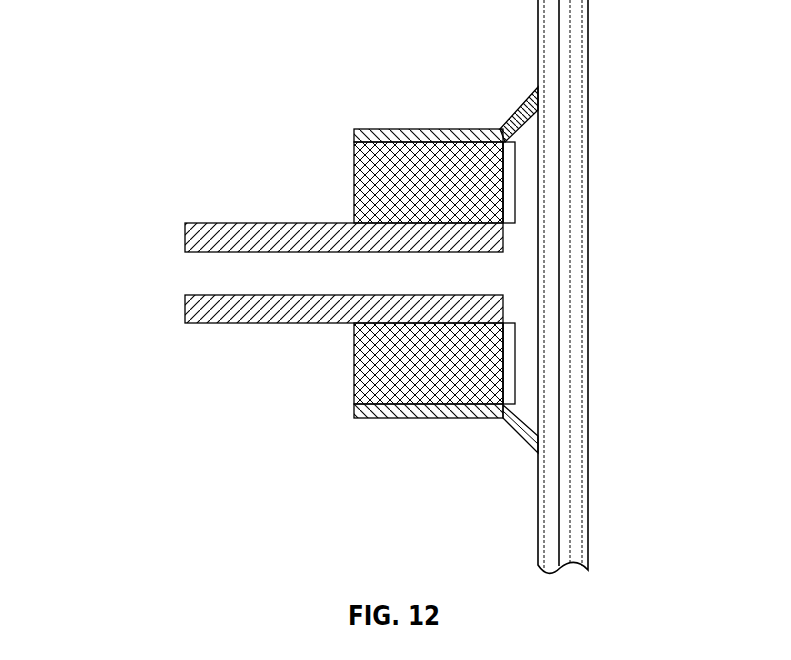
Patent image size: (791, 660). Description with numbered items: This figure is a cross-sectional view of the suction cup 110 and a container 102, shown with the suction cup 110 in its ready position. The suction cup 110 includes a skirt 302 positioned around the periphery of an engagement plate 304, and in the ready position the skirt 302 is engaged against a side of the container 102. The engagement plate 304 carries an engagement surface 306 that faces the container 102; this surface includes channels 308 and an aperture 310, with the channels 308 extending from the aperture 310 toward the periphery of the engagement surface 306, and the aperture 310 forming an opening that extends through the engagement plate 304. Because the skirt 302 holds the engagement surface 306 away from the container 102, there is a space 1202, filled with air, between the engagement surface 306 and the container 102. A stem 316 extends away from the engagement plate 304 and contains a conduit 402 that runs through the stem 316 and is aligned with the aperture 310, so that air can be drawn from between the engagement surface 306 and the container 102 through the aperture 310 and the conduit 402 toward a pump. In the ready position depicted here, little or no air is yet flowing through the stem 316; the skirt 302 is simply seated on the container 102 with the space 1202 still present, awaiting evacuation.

The suction cup 110 is at (128, 37).
The container 102 is at (592, 550).
The skirt 302 is at (515, 104).
The engagement plate 304 is at (355, 183).
The engagement surface 306 is at (515, 158).
The channels 308 is at (505, 207).
The aperture 310 is at (507, 267).
The space 1202 is at (528, 307).
The conduit 402 is at (203, 275).
The stem 316 is at (185, 313).